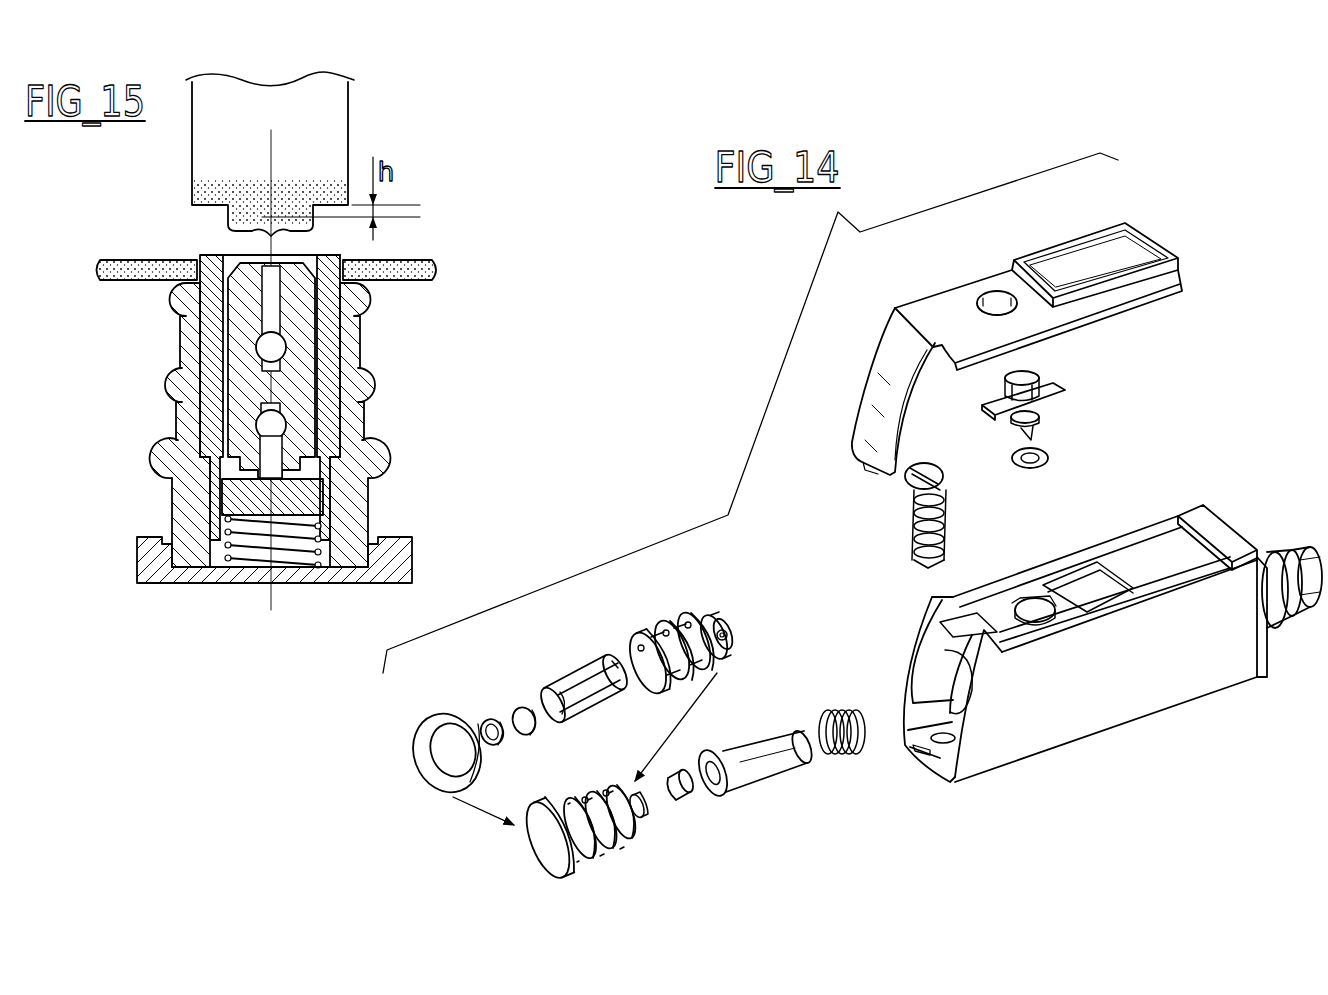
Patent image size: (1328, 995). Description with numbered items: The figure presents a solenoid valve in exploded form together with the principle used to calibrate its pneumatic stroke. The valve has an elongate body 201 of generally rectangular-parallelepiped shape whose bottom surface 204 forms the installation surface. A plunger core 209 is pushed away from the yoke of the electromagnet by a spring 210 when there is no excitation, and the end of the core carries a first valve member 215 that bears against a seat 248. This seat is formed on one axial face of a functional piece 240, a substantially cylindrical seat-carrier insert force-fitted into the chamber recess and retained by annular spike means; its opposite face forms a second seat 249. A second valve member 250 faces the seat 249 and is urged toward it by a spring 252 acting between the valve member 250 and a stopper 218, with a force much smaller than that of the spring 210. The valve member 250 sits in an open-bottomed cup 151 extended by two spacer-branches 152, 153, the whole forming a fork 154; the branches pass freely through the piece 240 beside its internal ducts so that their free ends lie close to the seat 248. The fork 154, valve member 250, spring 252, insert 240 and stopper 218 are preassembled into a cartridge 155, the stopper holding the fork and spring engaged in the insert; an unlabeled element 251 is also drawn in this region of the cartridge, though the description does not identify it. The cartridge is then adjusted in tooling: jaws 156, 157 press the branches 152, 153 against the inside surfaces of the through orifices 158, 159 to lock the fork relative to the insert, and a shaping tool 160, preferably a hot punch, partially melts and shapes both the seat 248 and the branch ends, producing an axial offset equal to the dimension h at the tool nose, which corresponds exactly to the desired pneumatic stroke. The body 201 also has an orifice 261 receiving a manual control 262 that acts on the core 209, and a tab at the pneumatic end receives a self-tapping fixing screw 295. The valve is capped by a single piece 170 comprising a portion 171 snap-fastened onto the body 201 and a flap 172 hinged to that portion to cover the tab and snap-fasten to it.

In FIG. 15, the open-bottomed cup 151 is at (330, 510).
In FIG. 14, the spacer-branch 152 is at (583, 703).
In FIG. 14, the spacer-branch 153 is at (608, 663).
In FIG. 15, the fork 154 is at (216, 441).
In FIG. 14, the fork 154 is at (587, 660).
In FIG. 15, the cartridge 155 is at (383, 398).
In FIG. 14, the cartridge 155 is at (600, 843).
In FIG. 15, the jaw 156 is at (136, 262).
In FIG. 15, the jaw 157 is at (430, 262).
In FIG. 15, the through orifice 158 is at (204, 345).
In FIG. 14, the through orifice 158 is at (718, 620).
In FIG. 15, the through orifice 159 is at (334, 343).
In FIG. 14, the through orifice 159 is at (728, 650).
In FIG. 15, the shaping tool 160 is at (290, 126).
In FIG. 14, the cap piece 170 is at (1146, 313).
In FIG. 14, the portion 171 is at (942, 307).
In FIG. 14, the flap 172 is at (885, 400).
In FIG. 14, the body 201 is at (1157, 678).
In FIG. 14, the bottom surface 204 is at (1096, 742).
In FIG. 14, the plunger core 209 is at (757, 760).
In FIG. 14, the spring 210 is at (842, 712).
In FIG. 14, the first valve member 215 is at (677, 770).
In FIG. 15, the stopper 218 is at (158, 570).
In FIG. 14, the stopper 218 is at (433, 713).
In FIG. 15, the functional piece 240 is at (170, 388).
In FIG. 14, the functional piece 240 is at (662, 622).
In FIG. 15, the seat 248 is at (298, 268).
In FIG. 14, the seat 248 is at (730, 636).
In FIG. 15, the seat 249 is at (322, 450).
In FIG. 15, the second valve member 250 is at (328, 476).
In FIG. 14, the second valve member 250 is at (525, 707).
In FIG. 15, the block 251 is at (272, 497).
In FIG. 14, the block 251 is at (552, 687).
In FIG. 15, the spring 252 is at (322, 546).
In FIG. 14, the spring 252 is at (487, 722).
In FIG. 14, the orifice 261 is at (1037, 610).
In FIG. 14, the manual control 262 is at (1045, 421).
In FIG. 14, the self-tapping fixing screw 295 is at (915, 500).